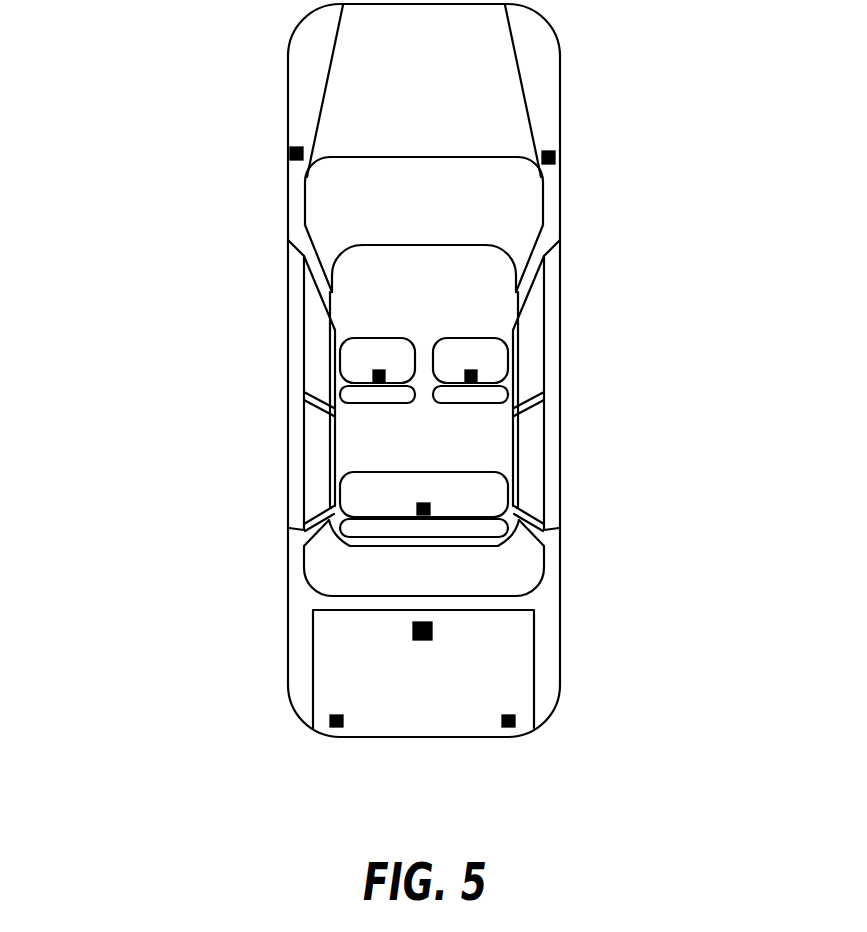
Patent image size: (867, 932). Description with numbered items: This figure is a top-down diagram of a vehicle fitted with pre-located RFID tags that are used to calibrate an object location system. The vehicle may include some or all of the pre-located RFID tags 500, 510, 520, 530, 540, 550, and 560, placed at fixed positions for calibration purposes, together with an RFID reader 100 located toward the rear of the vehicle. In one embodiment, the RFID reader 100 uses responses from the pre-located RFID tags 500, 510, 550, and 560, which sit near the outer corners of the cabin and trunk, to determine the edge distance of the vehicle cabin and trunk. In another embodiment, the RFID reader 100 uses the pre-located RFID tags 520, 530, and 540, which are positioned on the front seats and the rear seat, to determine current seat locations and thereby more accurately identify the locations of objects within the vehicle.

The RFID reader 100 is at (432, 631).
The pre-located RFID tag 500 is at (292, 152).
The pre-located RFID tag 510 is at (552, 157).
The pre-located RFID tag 520 is at (376, 374).
The pre-located RFID tag 530 is at (474, 375).
The pre-located RFID tag 540 is at (426, 509).
The pre-located RFID tag 550 is at (336, 722).
The pre-located RFID tag 560 is at (510, 727).